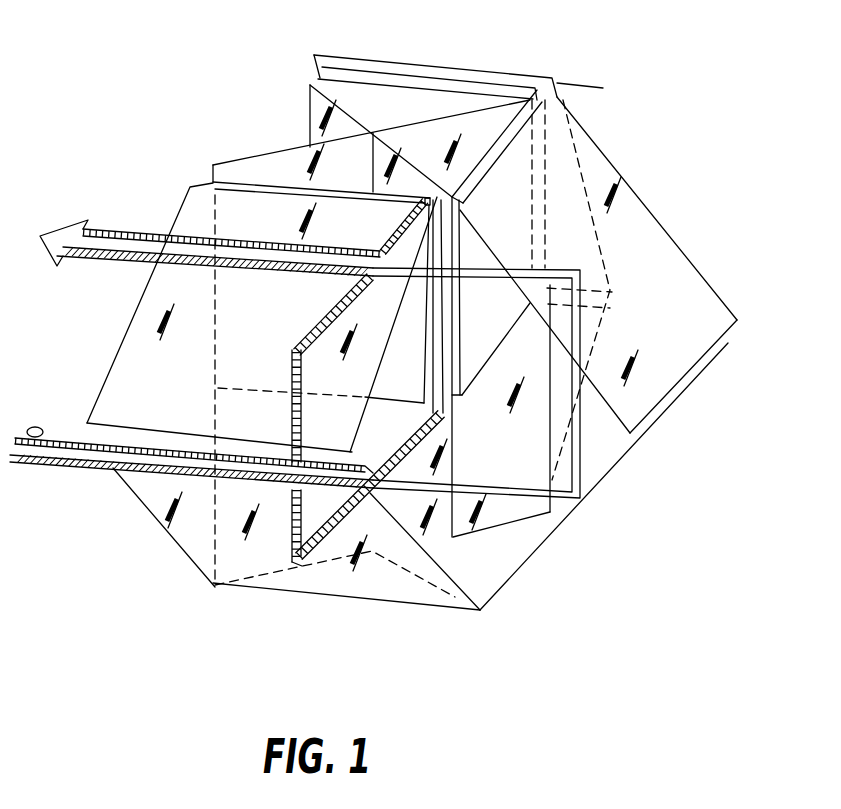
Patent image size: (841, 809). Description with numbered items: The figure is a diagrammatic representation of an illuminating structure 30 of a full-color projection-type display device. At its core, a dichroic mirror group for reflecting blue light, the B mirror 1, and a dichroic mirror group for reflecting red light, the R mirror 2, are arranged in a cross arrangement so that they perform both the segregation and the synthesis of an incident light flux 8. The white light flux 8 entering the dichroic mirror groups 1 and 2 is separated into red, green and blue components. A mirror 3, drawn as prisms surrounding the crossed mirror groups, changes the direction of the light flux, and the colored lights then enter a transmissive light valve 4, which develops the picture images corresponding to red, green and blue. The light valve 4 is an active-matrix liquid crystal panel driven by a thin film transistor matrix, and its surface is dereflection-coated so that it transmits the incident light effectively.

The illuminating structure 30 is at (446, 49).
The dichroic mirror group for reflecting blue light (B mirror) 1 is at (310, 107).
The dichroic mirror group for reflecting red light (R mirror) 2 is at (477, 110).
The mirror 3 is at (583, 127).
The transmissive light valve 4 is at (360, 97).
The incident light flux 8 is at (18, 458).